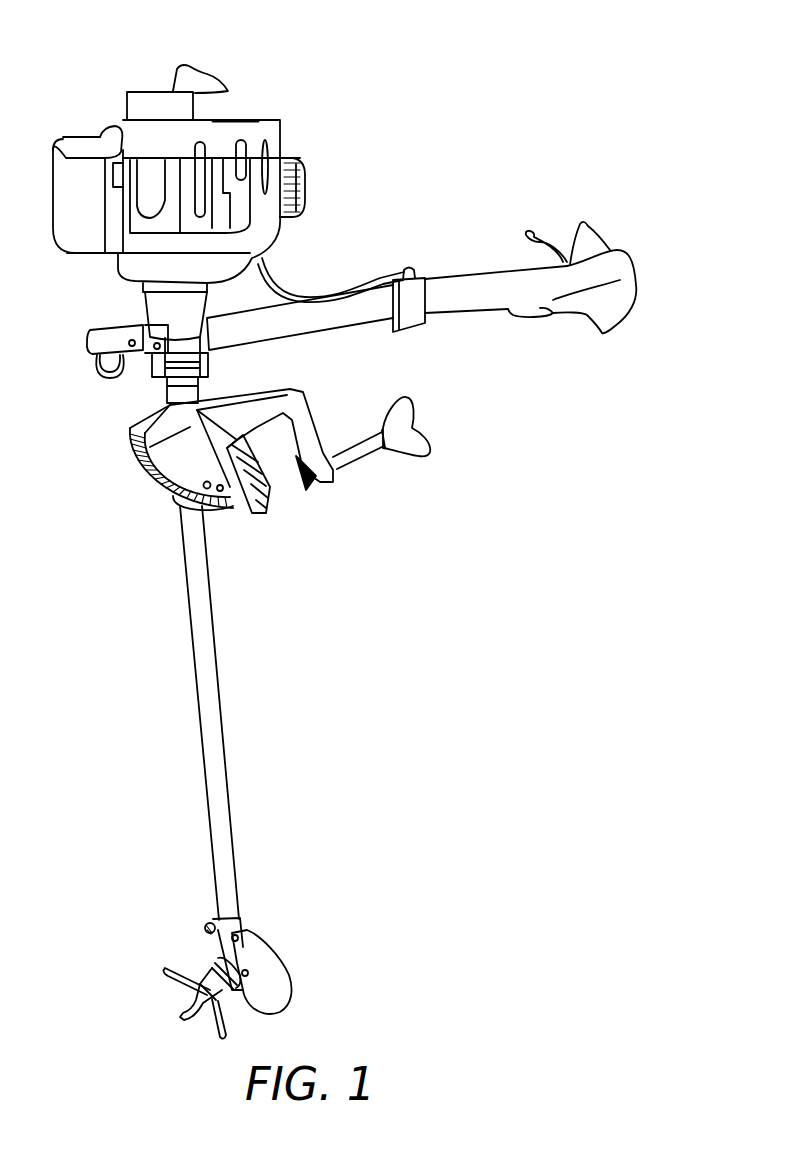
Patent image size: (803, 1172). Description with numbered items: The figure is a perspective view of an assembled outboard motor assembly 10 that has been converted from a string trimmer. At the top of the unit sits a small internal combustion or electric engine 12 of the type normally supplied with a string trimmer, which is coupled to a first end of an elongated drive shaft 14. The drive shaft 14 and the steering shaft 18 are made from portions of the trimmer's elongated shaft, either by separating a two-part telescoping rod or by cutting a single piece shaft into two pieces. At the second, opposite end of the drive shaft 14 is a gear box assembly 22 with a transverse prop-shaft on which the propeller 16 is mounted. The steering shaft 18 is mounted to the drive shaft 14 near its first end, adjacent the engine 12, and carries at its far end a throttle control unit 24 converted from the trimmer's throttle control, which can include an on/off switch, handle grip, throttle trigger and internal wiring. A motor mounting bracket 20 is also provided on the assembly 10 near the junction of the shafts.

The outboard motor assembly 10 is at (423, 61).
The engine 12 is at (147, 167).
The drive shaft 14 is at (195, 682).
The propeller 16 is at (180, 983).
The steering shaft 18 is at (354, 331).
The motor mounting bracket 20 is at (132, 436).
The gear box assembly 22 is at (217, 960).
The throttle control unit 24 is at (621, 265).